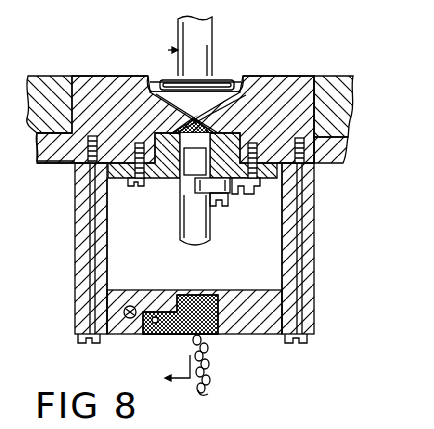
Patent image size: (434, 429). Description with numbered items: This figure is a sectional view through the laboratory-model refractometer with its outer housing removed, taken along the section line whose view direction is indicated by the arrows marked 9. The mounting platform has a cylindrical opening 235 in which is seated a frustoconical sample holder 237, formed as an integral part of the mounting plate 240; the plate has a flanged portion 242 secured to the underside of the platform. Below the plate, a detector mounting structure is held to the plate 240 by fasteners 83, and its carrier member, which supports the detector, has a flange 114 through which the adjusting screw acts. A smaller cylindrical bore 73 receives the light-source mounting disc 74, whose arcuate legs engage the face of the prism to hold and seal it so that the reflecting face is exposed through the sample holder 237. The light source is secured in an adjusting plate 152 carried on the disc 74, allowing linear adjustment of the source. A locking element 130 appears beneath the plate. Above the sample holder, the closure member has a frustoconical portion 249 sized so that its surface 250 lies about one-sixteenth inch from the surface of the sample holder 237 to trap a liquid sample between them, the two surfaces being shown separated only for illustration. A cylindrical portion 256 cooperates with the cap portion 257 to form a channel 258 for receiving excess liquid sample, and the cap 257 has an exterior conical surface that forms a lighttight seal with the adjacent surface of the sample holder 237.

The cylindrical opening 235 is at (72, 80).
The frustoconical sample holder 237 is at (138, 92).
The mounting plate 240 is at (138, 126).
The flanged portion 242 is at (73, 154).
The frustoconical portion 249 is at (270, 80).
The surface 250 is at (220, 124).
The cylindrical portion 256 is at (148, 82).
The cap portion 257 is at (221, 80).
The channel 258 is at (232, 90).
The cylindrical bore 73 is at (258, 138).
The fasteners 83 is at (336, 154).
The nut 130 is at (132, 186).
The light-source mounting disc 74 is at (161, 178).
The adjusting plate 152 is at (268, 198).
The flange 114 is at (162, 335).
The section line for FIG. 9 is at (188, 215).